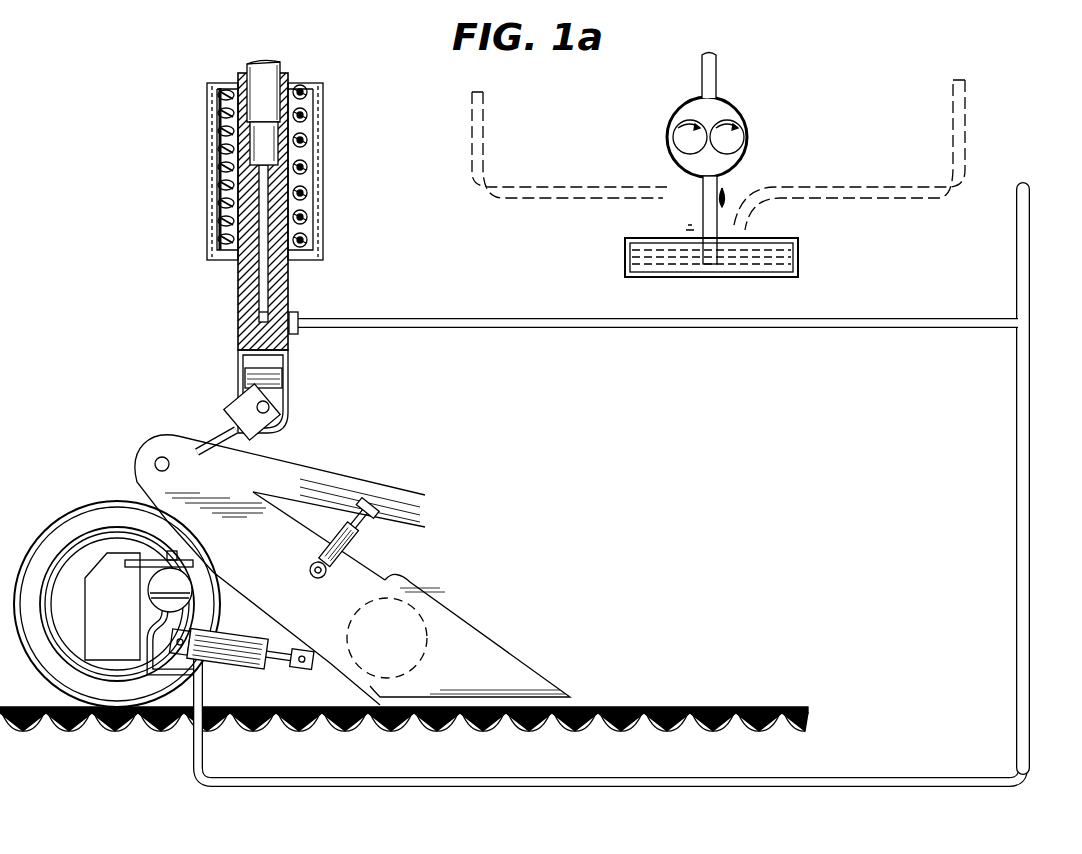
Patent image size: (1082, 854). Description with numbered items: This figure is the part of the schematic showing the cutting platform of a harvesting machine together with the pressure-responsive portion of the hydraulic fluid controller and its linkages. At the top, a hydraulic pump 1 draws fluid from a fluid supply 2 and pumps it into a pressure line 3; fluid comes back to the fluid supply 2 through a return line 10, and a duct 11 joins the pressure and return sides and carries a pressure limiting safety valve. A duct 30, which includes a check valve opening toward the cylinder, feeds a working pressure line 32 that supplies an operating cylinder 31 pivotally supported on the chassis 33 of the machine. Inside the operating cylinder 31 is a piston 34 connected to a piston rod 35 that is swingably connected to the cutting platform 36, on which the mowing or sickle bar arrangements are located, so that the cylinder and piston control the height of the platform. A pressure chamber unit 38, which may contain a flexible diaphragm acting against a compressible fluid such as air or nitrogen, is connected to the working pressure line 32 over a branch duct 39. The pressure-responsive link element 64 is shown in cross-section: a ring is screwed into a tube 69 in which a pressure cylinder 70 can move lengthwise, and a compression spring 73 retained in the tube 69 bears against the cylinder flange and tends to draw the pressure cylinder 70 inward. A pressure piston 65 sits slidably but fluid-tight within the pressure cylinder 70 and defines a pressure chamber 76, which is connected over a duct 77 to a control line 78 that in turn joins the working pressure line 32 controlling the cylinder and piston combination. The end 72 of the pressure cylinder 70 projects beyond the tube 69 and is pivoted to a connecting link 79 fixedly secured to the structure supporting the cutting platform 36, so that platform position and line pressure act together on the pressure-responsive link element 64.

The hydraulic pump 1 is at (735, 119).
The fluid supply 2 is at (625, 257).
The pressure line 3 is at (702, 72).
The return line 10 is at (484, 128).
The duct 11 is at (952, 110).
The duct 30 is at (160, 457).
The operating cylinder 31 is at (205, 664).
The working pressure line 32 is at (1029, 211).
The chassis 33 is at (100, 562).
The piston 34 is at (234, 628).
The piston rod 35 is at (296, 670).
The cutting platform 36 is at (485, 647).
The pressure chamber unit 38 is at (192, 578).
The branch duct 39 is at (175, 683).
The pressure-responsive link element 64 is at (252, 171).
The pressure piston 65 is at (250, 65).
The tube 69 is at (207, 115).
The pressure cylinder 70 is at (293, 178).
The end of pressure cylinder 72 is at (290, 375).
The compression spring 73 is at (218, 166).
The pressure chamber 76 is at (268, 132).
The duct 77 is at (276, 193).
The control line 78 is at (668, 330).
The connecting link 79 is at (220, 427).